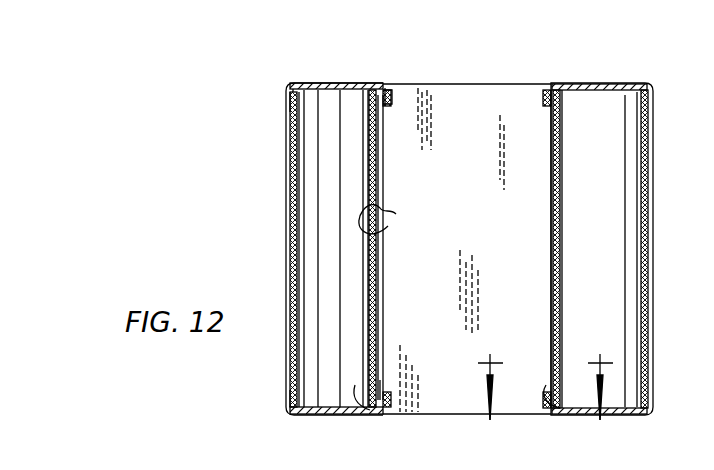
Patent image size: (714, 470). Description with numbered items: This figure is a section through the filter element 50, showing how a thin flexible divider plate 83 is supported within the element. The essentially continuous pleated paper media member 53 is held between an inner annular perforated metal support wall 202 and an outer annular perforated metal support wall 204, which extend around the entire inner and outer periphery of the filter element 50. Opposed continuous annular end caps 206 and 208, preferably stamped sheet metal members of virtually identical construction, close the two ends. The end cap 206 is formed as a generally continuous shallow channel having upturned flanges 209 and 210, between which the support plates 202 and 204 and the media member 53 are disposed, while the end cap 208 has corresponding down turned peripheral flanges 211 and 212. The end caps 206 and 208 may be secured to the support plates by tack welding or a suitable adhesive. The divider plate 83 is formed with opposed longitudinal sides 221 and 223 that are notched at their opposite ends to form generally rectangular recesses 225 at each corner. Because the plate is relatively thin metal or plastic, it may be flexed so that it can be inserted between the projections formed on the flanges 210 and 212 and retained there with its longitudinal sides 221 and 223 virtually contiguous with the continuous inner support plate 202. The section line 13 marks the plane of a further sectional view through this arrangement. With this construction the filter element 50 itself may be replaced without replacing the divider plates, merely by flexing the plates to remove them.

The section line 13— 13 is at (545, 401).
The filter element 50 is at (586, 82).
The pleated paper media member 53 is at (299, 268).
The divider plate 83 is at (520, 84).
The inner annular perforated metal support wall 202 is at (380, 256).
The outer annular perforated metal support wall 204 is at (290, 243).
The end cap 206 is at (322, 414).
The end cap 208 is at (332, 83).
The upturned flange 209 is at (288, 400).
The upturned flange 210 is at (383, 396).
The down turned peripheral flange 211 is at (290, 100).
The down turned peripheral flange 212 is at (393, 104).
The longitudinal side 221 is at (395, 247).
The longitudinal side 223 is at (552, 218).
The rectangular recess 225 is at (383, 96).